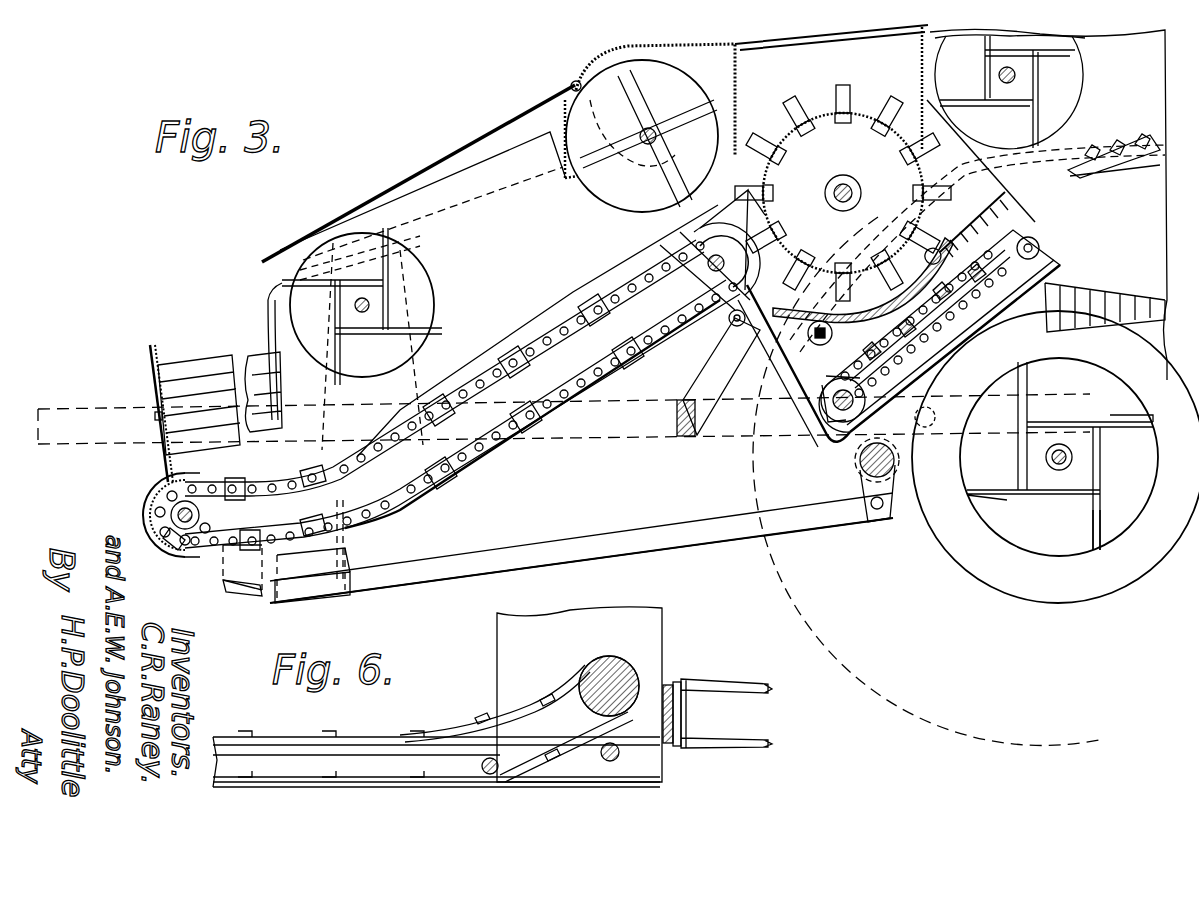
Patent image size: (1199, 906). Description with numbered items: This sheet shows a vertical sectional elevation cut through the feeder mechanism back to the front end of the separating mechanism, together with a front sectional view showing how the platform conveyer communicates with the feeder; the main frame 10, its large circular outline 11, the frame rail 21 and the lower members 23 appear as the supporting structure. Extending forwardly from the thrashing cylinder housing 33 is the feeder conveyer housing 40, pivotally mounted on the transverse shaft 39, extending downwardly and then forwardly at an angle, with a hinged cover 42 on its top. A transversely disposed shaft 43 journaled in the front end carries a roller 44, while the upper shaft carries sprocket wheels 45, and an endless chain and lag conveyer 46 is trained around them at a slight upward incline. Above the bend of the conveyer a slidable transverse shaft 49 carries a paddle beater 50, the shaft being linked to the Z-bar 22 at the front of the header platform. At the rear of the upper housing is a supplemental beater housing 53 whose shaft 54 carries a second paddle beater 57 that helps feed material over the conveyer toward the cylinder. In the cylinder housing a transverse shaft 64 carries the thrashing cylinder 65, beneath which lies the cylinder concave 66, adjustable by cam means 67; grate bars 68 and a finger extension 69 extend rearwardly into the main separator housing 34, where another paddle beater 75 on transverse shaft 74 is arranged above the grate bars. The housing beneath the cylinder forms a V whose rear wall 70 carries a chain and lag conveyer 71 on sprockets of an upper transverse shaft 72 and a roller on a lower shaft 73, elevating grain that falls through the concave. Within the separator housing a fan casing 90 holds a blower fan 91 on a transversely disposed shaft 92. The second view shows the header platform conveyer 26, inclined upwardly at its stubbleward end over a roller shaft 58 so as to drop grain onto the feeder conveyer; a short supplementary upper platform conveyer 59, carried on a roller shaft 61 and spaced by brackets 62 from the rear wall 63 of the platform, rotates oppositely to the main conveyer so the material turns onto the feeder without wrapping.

In FIG. 3, the bracket 10 is at (858, 466).
In FIG. 3, the wheel path circle 11 is at (915, 728).
In FIG. 3, the frame rail 21 is at (648, 548).
In FIG. 3, the Z-bar 22 is at (224, 588).
In FIG. 3, the box 23 is at (370, 586).
In FIG. 6, the header platform conveyer 26 is at (370, 738).
In FIG. 3, the thrashing cylinder housing 33 is at (815, 55).
In FIG. 3, the main separator housing 34 is at (1048, 204).
In FIG. 3, the transverse shaft 39 is at (690, 252).
In FIG. 3, the feeder conveyer housing 40 is at (655, 328).
In FIG. 3, the hinged cover 42 is at (458, 140).
In FIG. 3, the transversely disposed shaft 43 is at (160, 500).
In FIG. 3, the roller 44 is at (185, 552).
In FIG. 3, the sprocket wheels 45 is at (695, 268).
In FIG. 3, the endless chain and lag conveyer 46 is at (605, 372).
In FIG. 6, the endless chain and lag conveyer 46 is at (745, 688).
In FIG. 3, the transverse shaft 49 is at (380, 297).
In FIG. 3, the beater 50 is at (440, 328).
In FIG. 3, the supplemental beater housing 53 is at (665, 58).
In FIG. 3, the shaft 54 is at (652, 128).
In FIG. 3, the beater 57 is at (628, 112).
In FIG. 6, the roller shaft 58 is at (645, 660).
In FIG. 3, the supplementary upper platform conveyer 59 is at (192, 362).
In FIG. 3, the roller shaft 61 is at (155, 410).
In FIG. 3, the brackets 62 is at (268, 300).
In FIG. 3, the rear wall 63 is at (322, 418).
In FIG. 6, the rear wall 63 is at (562, 632).
In FIG. 3, the transverse shaft 64 is at (850, 182).
In FIG. 3, the thrashing cylinder 65 is at (862, 105).
In FIG. 3, the cylinder concave 66 is at (840, 318).
In FIG. 3, the cam means 67 is at (818, 340).
In FIG. 3, the grate bars 68 is at (960, 222).
In FIG. 3, the finger extension 69 is at (1105, 150).
In FIG. 3, the rear wall 70 is at (1017, 305).
In FIG. 3, the chain and lag conveyer 71 is at (962, 272).
In FIG. 3, the transverse shaft 72 is at (1028, 235).
In FIG. 3, the shaft 73 is at (828, 432).
In FIG. 3, the transverse shaft 74 is at (1012, 68).
In FIG. 3, the paddle beater 75 is at (1055, 110).
In FIG. 3, the fan casing 90 is at (1028, 578).
In FIG. 3, the blower fan 91 is at (1095, 528).
In FIG. 3, the shaft 92 is at (1075, 455).